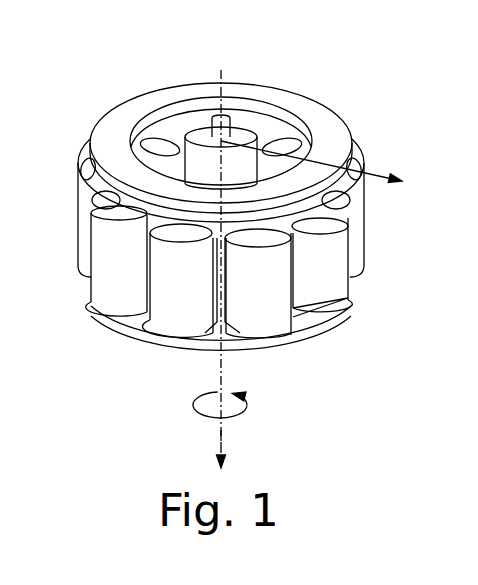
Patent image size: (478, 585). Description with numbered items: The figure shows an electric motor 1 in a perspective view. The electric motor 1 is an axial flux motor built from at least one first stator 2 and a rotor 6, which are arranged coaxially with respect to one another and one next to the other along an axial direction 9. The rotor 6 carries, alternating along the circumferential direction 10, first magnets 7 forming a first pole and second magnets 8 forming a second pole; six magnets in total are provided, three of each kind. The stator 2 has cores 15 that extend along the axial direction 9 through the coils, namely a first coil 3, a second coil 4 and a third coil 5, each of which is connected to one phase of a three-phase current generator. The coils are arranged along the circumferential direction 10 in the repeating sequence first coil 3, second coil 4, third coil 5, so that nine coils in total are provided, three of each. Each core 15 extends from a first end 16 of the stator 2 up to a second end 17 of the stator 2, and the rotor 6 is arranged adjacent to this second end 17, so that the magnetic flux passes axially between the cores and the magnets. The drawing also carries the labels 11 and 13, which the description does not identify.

The electric motor 1 is at (323, 77).
The first stator 2 is at (66, 258).
The first coil 3 is at (108, 280).
The second coil 4 is at (276, 318).
The third coil 5 is at (175, 307).
The rotor 6 is at (153, 107).
The first magnets 7 is at (176, 122).
The second magnets 8 is at (247, 117).
The axial direction 9 is at (230, 274).
The circumferential direction 10 is at (237, 400).
The rotation axis 11 is at (219, 437).
The radial direction 13 is at (325, 162).
The cores 15 is at (348, 203).
The first end 16 is at (113, 338).
The second end 17 is at (81, 124).